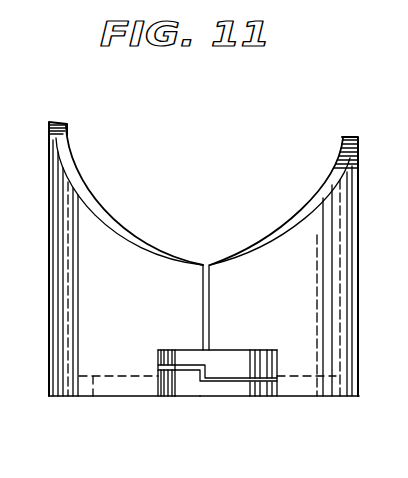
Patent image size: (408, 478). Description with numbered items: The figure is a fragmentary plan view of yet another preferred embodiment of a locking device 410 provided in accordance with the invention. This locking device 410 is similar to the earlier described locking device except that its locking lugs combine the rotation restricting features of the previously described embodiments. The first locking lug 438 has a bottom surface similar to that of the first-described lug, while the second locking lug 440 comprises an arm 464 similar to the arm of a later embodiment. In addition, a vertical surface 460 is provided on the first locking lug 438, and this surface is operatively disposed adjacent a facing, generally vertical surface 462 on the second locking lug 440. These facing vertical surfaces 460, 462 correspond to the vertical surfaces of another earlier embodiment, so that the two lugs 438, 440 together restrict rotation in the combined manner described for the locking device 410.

The locking device 410 is at (45, 193).
The second locking lug 440 is at (211, 350).
The arm 464 is at (183, 320).
The vertical surface 462 is at (212, 372).
The vertical surface 460 is at (201, 383).
The first locking lug 438 is at (182, 377).